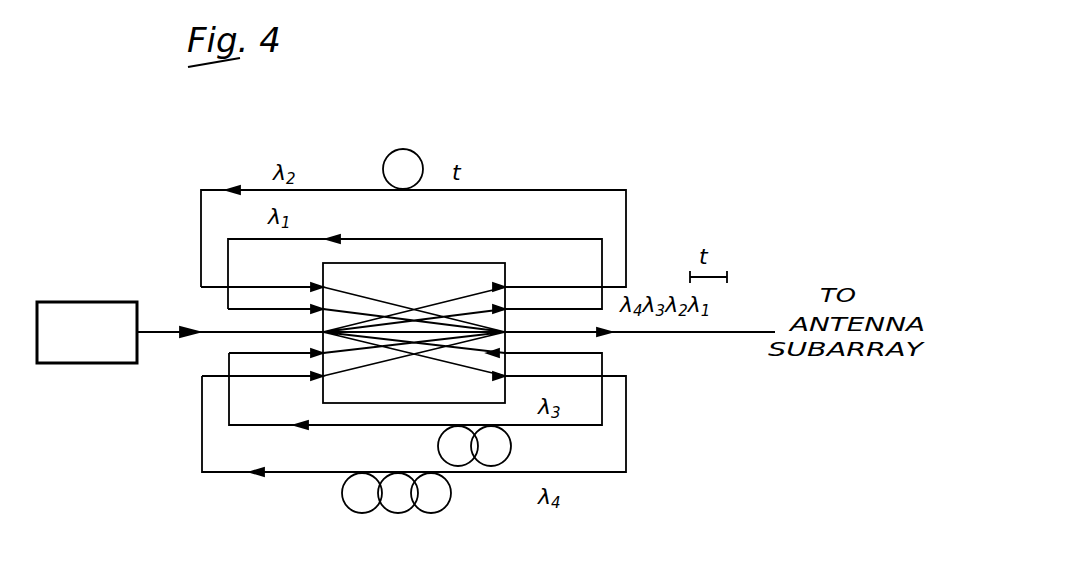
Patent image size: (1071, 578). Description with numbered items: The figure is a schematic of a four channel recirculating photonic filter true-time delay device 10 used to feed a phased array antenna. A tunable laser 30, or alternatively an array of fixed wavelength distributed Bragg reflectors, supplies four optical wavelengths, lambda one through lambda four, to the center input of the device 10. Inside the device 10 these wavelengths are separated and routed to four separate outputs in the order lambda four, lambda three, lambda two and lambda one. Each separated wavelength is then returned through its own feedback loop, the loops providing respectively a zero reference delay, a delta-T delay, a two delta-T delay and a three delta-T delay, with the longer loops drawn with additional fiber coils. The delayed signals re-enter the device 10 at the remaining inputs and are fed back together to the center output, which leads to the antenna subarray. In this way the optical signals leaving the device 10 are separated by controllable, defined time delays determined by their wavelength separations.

The device 10 is at (707, 158).
The tunable laser 30 is at (100, 302).